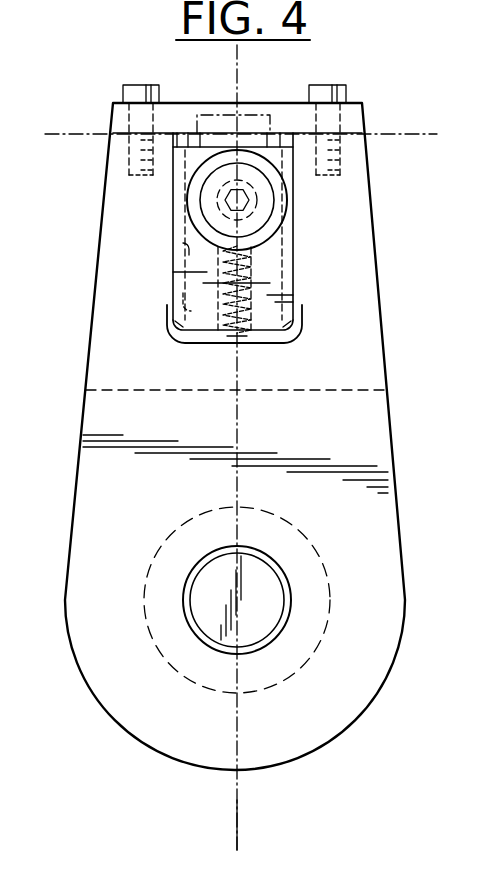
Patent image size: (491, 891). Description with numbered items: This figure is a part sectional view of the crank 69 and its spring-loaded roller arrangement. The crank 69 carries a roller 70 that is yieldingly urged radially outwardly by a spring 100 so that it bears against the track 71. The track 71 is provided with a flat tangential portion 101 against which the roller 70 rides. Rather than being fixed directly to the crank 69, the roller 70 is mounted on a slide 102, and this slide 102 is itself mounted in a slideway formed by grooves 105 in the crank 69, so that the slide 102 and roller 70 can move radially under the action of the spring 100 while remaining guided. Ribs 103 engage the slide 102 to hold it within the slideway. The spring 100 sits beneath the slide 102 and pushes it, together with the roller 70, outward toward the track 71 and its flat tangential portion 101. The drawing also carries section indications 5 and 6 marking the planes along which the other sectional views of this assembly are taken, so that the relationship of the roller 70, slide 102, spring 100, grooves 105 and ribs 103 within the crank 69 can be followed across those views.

The section line 5- 5 is at (230, 63).
The section line 6- 6 is at (75, 135).
The crank 69 is at (383, 448).
The roller 70 is at (273, 220).
The track 71 is at (490, 118).
The spring 100 is at (229, 336).
The flat tangential portion 101 is at (268, 157).
The slide 102 is at (270, 272).
The ribs 103 is at (183, 250).
The grooves 105 is at (165, 328).